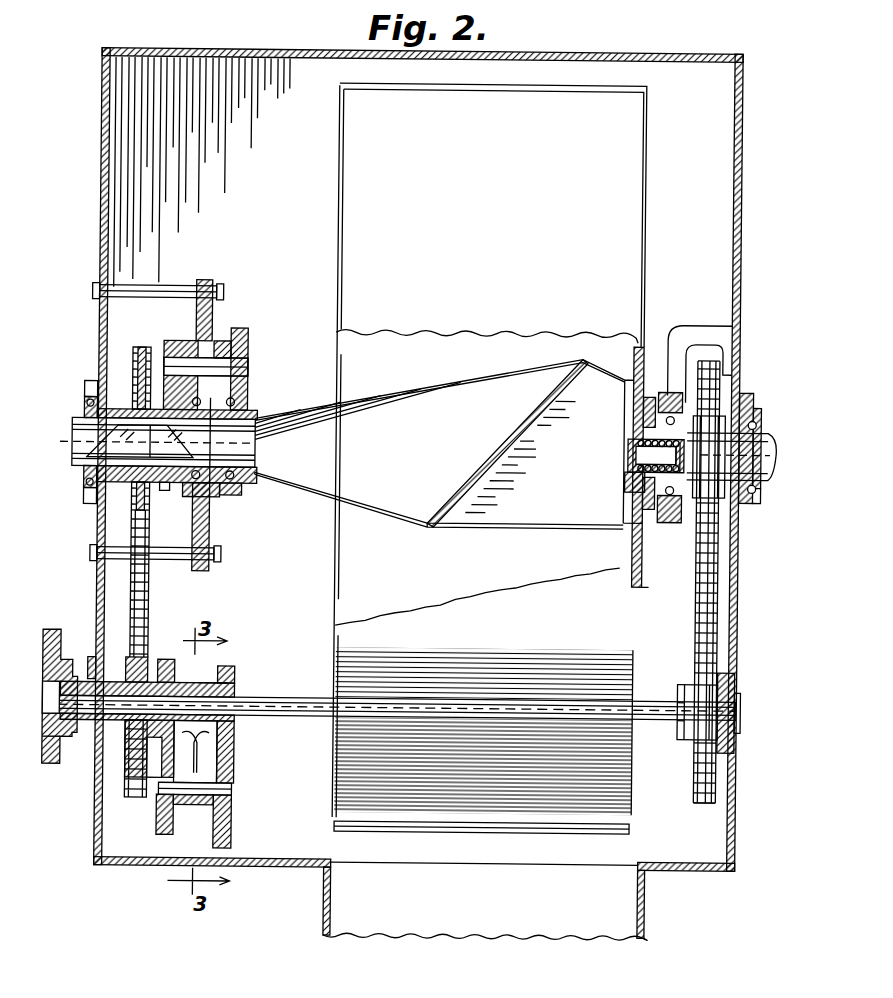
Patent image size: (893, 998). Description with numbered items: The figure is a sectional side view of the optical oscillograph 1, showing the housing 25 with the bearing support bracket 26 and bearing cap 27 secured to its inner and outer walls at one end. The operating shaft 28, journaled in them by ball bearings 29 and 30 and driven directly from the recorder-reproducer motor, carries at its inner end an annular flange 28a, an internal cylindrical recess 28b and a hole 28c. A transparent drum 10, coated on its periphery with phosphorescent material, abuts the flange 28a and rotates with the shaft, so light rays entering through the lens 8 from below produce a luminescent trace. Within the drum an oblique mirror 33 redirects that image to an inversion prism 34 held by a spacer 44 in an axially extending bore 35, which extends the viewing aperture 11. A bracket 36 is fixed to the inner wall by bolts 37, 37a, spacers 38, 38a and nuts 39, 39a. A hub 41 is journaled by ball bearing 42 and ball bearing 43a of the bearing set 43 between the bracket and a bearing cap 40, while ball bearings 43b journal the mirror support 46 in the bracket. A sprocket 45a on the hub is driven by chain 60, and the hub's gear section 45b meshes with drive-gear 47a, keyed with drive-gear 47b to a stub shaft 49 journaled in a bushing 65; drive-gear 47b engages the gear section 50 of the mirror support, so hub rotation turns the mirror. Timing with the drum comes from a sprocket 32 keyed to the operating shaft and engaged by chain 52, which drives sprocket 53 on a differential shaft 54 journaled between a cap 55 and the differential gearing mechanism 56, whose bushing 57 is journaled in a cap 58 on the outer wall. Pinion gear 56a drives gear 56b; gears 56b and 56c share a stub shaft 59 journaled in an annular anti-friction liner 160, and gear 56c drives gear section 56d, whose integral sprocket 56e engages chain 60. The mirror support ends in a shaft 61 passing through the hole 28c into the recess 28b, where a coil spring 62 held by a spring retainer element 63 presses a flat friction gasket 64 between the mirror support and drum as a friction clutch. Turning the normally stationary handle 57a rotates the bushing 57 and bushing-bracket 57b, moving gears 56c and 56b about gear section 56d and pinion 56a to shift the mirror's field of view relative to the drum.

The optical oscillograph 1 is at (748, 241).
The lens 8 is at (633, 832).
The transparent drum 10 is at (643, 200).
The viewing aperture 11 is at (300, 455).
The housing 25 is at (104, 157).
The bearing support bracket 26 is at (690, 323).
The bearing cap 27 is at (752, 396).
The operating shaft 28 is at (775, 430).
The annular flange 28a is at (648, 395).
The internal cylindrical recess 28b is at (706, 448).
The hole 28c is at (628, 465).
The ball bearing 29 is at (680, 416).
The ball bearing 30 is at (761, 492).
The sprocket 32 is at (697, 538).
The mirror 33 is at (502, 438).
The inversion prism 34 is at (100, 438).
The axially extending bore 35 is at (74, 440).
The bracket 36 is at (206, 282).
The bolt 37 is at (90, 293).
The bolt 37a is at (90, 555).
The spacer 38 is at (150, 289).
The spacer 38a is at (177, 563).
The nut 39 is at (222, 295).
The nut 39a is at (222, 555).
The bearing cap 40 is at (90, 384).
The hub 41 is at (120, 412).
The ball bearing 42 is at (85, 486).
The bearing housing 43 is at (170, 477).
The ball bearing 43a is at (192, 506).
The ball bearings 43b is at (233, 495).
The spacer 44 is at (142, 438).
The sprocket 45a is at (141, 350).
The gear section 45b is at (150, 500).
The mirror support 46 is at (320, 494).
The drive-gear 47a is at (190, 343).
The drive-gear 47b is at (247, 342).
The stub shaft 49 is at (247, 368).
The gear section 50 is at (252, 421).
The chain 52 is at (697, 600).
The sprocket 53 is at (697, 650).
The differential shaft 54 is at (490, 706).
The cap 55 is at (736, 692).
The differential gearing mechanism 56 is at (172, 662).
The pinion gear 56a is at (237, 676).
The gear 56b is at (237, 776).
The gear 56c is at (160, 822).
The gear section 56d is at (150, 660).
The sprocket 56e is at (130, 768).
The bushing 57 is at (120, 686).
The handle 57a is at (54, 768).
The bushing-bracket 57b is at (206, 685).
The cap 58 is at (92, 660).
The stub shaft 59 is at (237, 793).
The chain 60 is at (132, 590).
The shaft 61 is at (628, 446).
The coil spring 62 is at (628, 480).
The spring retainer element 63 is at (683, 493).
The flat friction gasket 64 is at (628, 380).
The bushing 65 is at (221, 343).
The annular anti-friction liner 160 is at (197, 808).